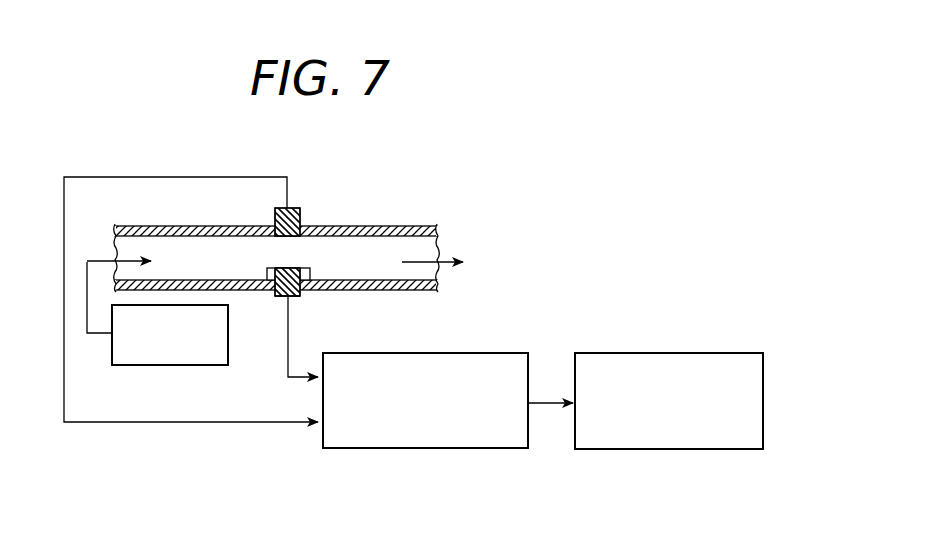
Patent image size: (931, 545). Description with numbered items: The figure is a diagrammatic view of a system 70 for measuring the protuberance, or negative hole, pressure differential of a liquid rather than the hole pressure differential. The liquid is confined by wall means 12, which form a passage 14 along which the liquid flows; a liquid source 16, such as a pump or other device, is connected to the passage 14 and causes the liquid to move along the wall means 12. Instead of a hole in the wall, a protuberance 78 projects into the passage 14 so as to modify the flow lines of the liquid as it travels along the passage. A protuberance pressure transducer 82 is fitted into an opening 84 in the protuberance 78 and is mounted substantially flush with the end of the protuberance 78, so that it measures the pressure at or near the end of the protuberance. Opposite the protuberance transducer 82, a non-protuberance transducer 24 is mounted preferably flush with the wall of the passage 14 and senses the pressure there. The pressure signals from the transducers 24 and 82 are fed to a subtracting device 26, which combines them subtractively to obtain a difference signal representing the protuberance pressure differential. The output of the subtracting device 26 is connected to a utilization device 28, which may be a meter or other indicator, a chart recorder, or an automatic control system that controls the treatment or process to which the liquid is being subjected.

The system 70 is at (310, 248).
The wall means 12 is at (398, 289).
The passage 14 is at (420, 244).
The non-protuberance transducer 24 is at (292, 208).
The protuberance 78 is at (268, 276).
The protuberance pressure transducer 82 is at (300, 268).
The opening 84 is at (289, 298).
The liquid source 16 is at (160, 365).
The subtracting device 26 is at (445, 353).
The utilization device 28 is at (645, 353).